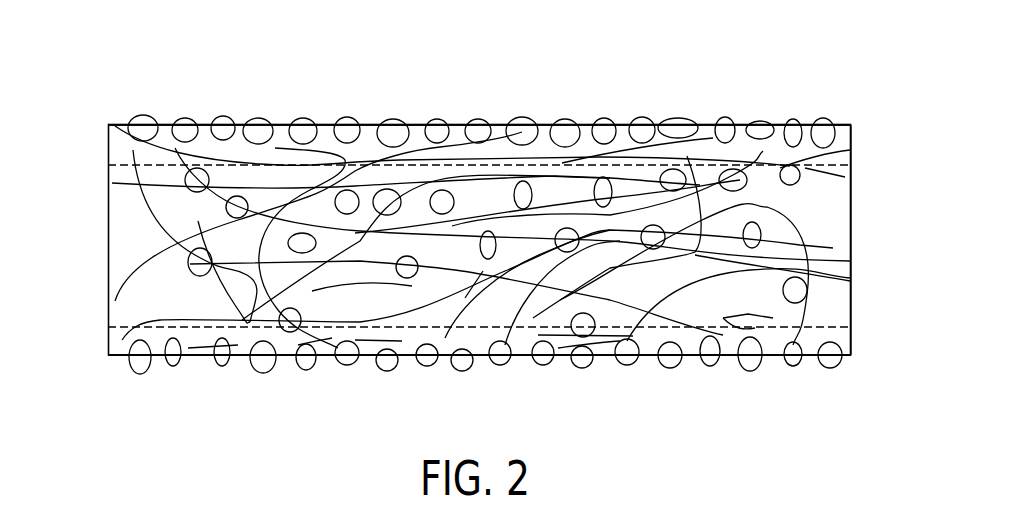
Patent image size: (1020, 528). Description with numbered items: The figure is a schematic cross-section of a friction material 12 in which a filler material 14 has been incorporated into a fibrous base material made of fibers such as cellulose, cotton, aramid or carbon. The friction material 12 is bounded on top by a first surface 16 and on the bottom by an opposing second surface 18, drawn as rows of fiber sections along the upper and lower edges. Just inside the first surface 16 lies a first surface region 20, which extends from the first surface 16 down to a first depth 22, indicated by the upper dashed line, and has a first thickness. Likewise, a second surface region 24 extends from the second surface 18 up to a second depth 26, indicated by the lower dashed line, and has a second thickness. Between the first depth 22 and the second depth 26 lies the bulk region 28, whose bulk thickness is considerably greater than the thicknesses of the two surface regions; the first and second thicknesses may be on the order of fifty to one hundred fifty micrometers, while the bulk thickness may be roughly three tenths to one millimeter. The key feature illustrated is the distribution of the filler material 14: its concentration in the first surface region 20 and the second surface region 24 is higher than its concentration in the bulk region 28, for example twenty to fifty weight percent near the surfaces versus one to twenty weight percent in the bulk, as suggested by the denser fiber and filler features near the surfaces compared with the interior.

The friction material 12 is at (90, 204).
The filler material 14 is at (852, 160).
The first surface 16 is at (125, 124).
The second surface 18 is at (120, 357).
The first surface region 20 is at (855, 130).
The first depth 22 is at (108, 165).
The second surface region 24 is at (853, 340).
The second depth 26 is at (107, 327).
The bulk region 28 is at (853, 243).